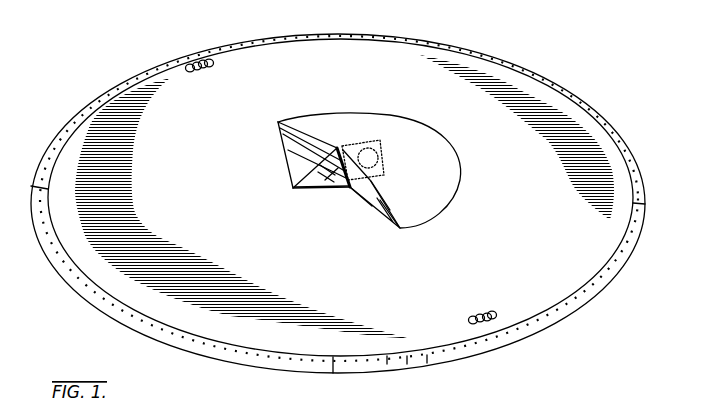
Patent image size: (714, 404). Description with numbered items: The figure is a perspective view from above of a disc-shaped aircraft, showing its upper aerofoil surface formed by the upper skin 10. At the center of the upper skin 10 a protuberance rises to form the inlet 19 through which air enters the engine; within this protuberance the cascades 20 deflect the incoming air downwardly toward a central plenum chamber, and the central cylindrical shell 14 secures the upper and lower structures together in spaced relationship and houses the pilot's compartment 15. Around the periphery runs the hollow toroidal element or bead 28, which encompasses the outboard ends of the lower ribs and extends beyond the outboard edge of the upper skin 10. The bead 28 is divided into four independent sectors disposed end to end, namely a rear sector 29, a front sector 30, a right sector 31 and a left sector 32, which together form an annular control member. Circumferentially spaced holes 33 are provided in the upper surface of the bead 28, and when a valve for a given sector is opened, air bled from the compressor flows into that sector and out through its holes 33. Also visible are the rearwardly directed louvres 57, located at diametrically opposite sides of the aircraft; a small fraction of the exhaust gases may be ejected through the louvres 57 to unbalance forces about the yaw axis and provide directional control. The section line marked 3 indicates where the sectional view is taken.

The upper skin 10 is at (263, 342).
The central cone assembly / section line 3 is at (321, 158).
The central cylindrical shell 14 is at (378, 205).
The pilot's compartment 15 is at (314, 186).
The inlet 19 is at (362, 195).
The cascades 20 is at (388, 212).
The hollow toroidal element or bead 28 is at (313, 362).
The rear sector 29 is at (535, 78).
The front sector 30 is at (128, 319).
The right sector 31 is at (118, 81).
The left sector 32 is at (568, 317).
The circumferentially spaced holes 33 is at (427, 358).
The rearwardly directed louvres 57 is at (214, 63).